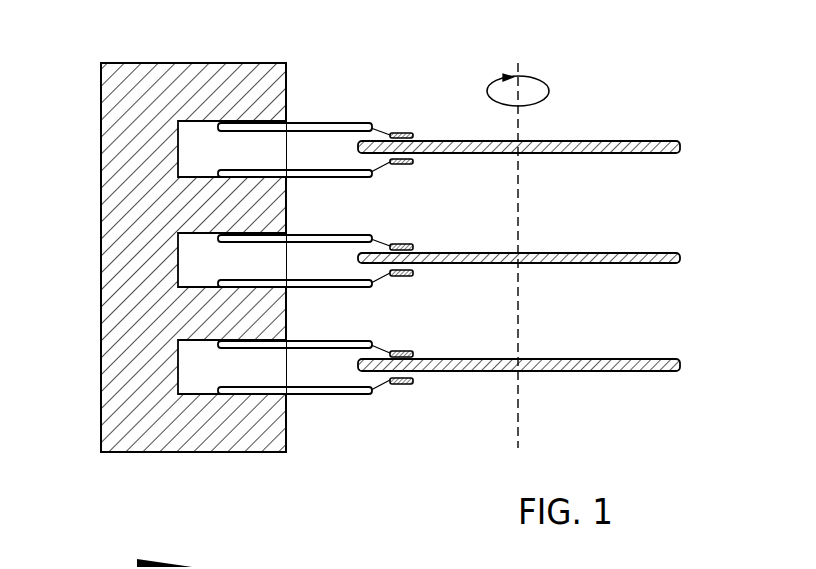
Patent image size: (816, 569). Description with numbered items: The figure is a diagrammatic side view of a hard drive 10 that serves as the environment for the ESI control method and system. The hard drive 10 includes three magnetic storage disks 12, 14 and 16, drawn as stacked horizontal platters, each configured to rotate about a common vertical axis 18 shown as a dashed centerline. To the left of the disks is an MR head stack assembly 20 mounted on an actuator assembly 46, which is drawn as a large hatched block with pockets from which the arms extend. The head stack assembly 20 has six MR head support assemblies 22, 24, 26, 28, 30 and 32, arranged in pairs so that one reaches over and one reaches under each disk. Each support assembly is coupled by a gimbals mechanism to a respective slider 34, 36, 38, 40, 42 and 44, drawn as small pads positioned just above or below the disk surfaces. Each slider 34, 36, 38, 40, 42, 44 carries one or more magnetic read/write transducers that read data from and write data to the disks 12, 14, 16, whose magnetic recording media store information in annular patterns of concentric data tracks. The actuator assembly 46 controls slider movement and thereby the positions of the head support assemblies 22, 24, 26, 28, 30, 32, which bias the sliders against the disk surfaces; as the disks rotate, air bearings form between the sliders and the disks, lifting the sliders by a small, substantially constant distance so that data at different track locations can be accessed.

The hard drive 10 is at (525, 245).
The magnetic storage disk 12 is at (642, 153).
The magnetic storage disk 14 is at (645, 264).
The magnetic storage disk 16 is at (645, 371).
The axis 18 is at (520, 413).
The MR head stack assembly 20 is at (272, 231).
The MR head support assembly 22 is at (340, 123).
The MR head support assembly 24 is at (307, 170).
The MR head support assembly 26 is at (342, 235).
The MR head support assembly 28 is at (307, 280).
The MR head support assembly 30 is at (343, 341).
The MR head support assembly 32 is at (307, 387).
The slider 34 is at (407, 132).
The slider 36 is at (407, 165).
The slider 38 is at (407, 243).
The slider 40 is at (407, 277).
The slider 42 is at (407, 350).
The slider 44 is at (407, 385).
The actuator assembly 46 is at (197, 73).